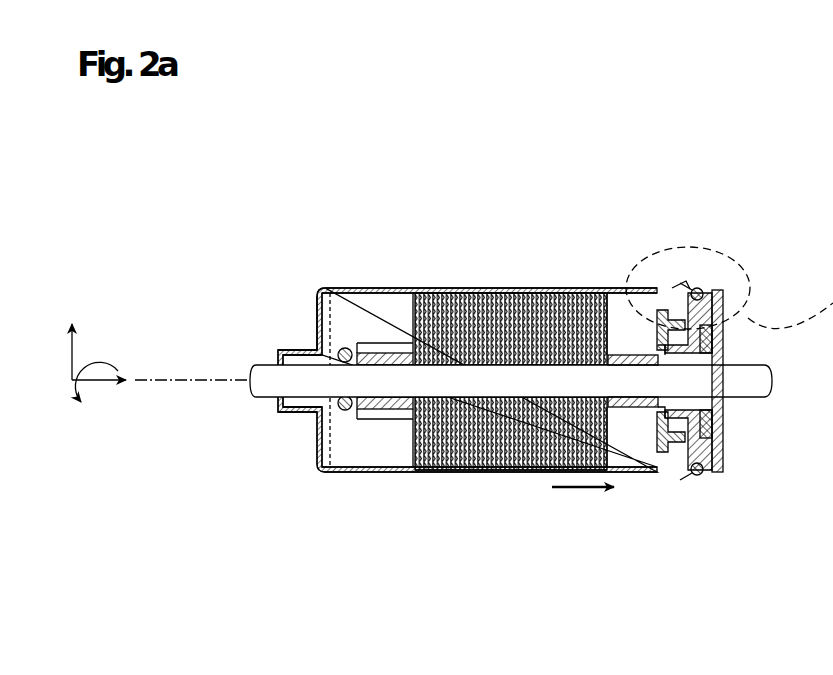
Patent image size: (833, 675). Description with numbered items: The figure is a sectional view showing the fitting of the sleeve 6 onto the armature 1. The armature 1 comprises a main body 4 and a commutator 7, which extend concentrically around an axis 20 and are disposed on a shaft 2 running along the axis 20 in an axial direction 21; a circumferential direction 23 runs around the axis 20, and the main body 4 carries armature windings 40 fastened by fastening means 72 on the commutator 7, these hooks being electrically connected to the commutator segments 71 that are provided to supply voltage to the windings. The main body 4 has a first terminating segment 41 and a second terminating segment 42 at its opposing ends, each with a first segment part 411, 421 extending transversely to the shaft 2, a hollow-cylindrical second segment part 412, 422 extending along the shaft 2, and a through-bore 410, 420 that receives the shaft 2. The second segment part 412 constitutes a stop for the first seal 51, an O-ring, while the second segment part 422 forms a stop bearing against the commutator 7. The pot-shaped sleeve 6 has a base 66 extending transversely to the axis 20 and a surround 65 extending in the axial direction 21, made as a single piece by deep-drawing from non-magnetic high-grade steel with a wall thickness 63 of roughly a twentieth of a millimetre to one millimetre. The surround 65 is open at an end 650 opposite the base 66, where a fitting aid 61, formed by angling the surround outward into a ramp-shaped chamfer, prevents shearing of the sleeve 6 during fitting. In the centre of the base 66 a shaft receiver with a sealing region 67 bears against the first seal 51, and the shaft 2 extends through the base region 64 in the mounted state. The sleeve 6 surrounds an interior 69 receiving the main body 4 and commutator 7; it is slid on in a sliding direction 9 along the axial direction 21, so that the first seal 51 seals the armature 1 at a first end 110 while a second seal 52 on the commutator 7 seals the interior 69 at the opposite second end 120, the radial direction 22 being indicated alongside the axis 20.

The armature 1 is at (354, 176).
The shaft 2 is at (285, 386).
The main body 4 is at (470, 455).
The sleeve 6 is at (395, 287).
The commutator 7 is at (722, 413).
The sliding direction 9 is at (585, 492).
The axis 20 is at (183, 380).
The axial direction 21 is at (100, 383).
The radial direction 22 is at (72, 352).
The circumferential direction 23 is at (82, 402).
The stator windings 40 is at (524, 462).
The first terminating segment 41 is at (400, 446).
The second terminating segment 42 is at (659, 446).
The first seal 51 is at (343, 350).
The second seal 52 is at (712, 289).
The fitting aid 61 is at (681, 285).
The wall thickness 63 is at (360, 326).
The lower flange portion 64 is at (290, 413).
The surround 65 is at (486, 291).
The base 66 is at (318, 335).
The sealing region 67 is at (278, 360).
The interior 69 is at (355, 437).
The commutator segments 71 is at (723, 327).
The fastening means 72 is at (650, 322).
The first end 110 is at (296, 500).
The second end 120 is at (735, 503).
The through-bore 410 is at (400, 374).
The first segment part 411 is at (413, 418).
The second segment part 412 is at (385, 412).
The through-bore 420 is at (622, 378).
The first segment part 421 is at (640, 407).
The second segment part 422 is at (668, 455).
The open end 650 is at (704, 270).